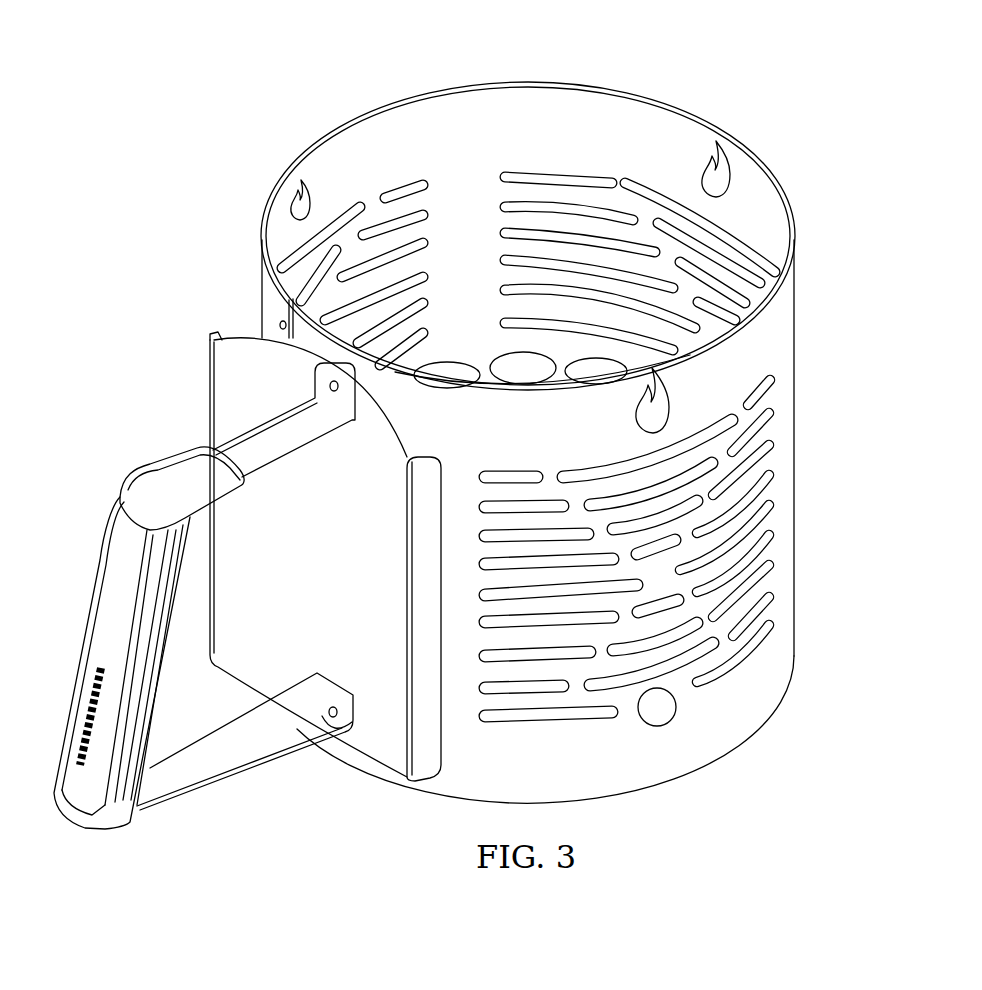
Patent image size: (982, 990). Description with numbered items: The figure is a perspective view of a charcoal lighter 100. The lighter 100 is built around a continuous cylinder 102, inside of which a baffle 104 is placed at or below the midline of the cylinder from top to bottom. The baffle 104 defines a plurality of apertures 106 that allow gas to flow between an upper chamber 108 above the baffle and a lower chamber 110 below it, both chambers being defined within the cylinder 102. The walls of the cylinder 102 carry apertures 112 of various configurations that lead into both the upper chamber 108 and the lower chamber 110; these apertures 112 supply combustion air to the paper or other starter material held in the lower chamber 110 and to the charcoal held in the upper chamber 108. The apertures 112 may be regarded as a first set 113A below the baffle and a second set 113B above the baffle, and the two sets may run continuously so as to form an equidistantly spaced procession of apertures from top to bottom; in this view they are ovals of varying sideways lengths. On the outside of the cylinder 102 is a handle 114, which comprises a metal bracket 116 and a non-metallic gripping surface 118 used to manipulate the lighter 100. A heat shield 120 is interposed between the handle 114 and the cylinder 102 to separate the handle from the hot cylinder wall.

The lighter 100 is at (676, 56).
The continuous cylinder 102 is at (537, 81).
The baffle 104 is at (510, 352).
The apertures 106 is at (448, 370).
The upper chamber 108 is at (457, 130).
The lower chamber 110 is at (678, 783).
The apertures 112 is at (765, 381).
The first set 113A is at (801, 575).
The second set 113B is at (801, 375).
The handle 114 is at (222, 772).
The metal bracket 116 is at (291, 418).
The non-metallic gripping surface 118 is at (118, 550).
The heat shield 120 is at (218, 416).